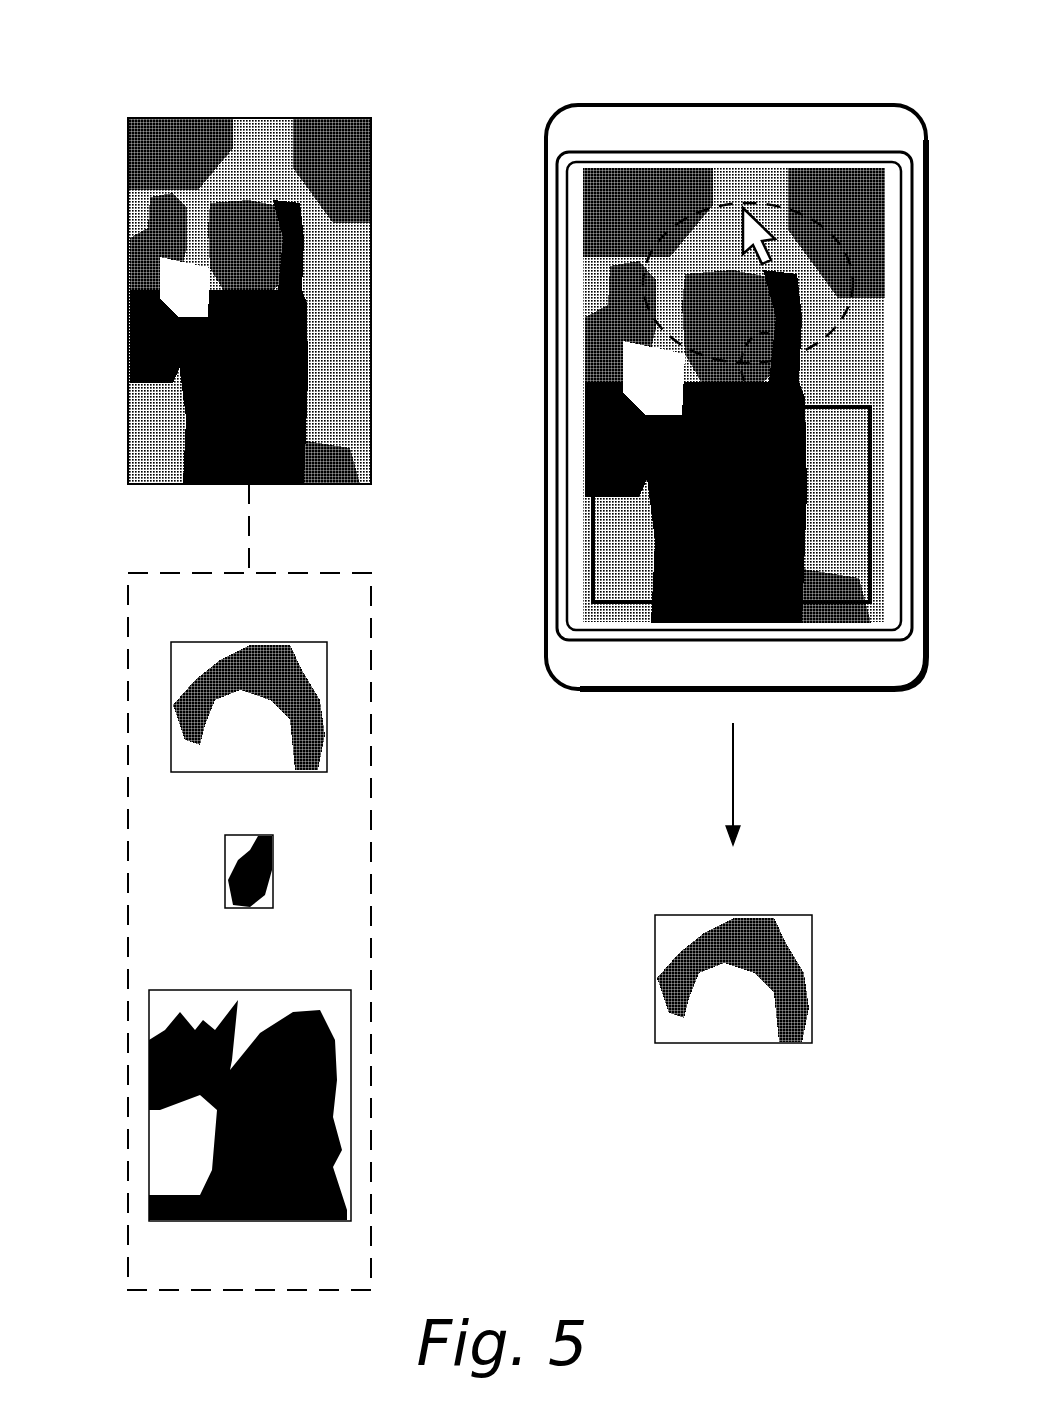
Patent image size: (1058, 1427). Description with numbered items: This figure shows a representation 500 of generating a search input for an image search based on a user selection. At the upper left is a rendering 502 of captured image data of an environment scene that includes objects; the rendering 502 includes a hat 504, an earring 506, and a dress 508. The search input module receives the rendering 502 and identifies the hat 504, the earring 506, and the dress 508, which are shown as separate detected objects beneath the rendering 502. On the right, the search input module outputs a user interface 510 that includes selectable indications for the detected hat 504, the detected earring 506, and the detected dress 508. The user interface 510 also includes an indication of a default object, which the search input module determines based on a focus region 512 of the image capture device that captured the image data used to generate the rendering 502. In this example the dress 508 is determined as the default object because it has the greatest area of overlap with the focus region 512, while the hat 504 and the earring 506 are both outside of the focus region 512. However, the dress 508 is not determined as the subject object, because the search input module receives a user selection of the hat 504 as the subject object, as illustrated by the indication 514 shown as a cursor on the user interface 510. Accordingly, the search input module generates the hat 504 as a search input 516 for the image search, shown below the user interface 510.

The representation 500 is at (182, 62).
The rendering 502 is at (356, 118).
The hat 504 is at (250, 642).
The earring 506 is at (250, 835).
The dress 508 is at (266, 990).
The user interface 510 is at (820, 165).
The focus region 512 is at (840, 613).
The indication 514 is at (743, 206).
The search input 516 is at (682, 1043).